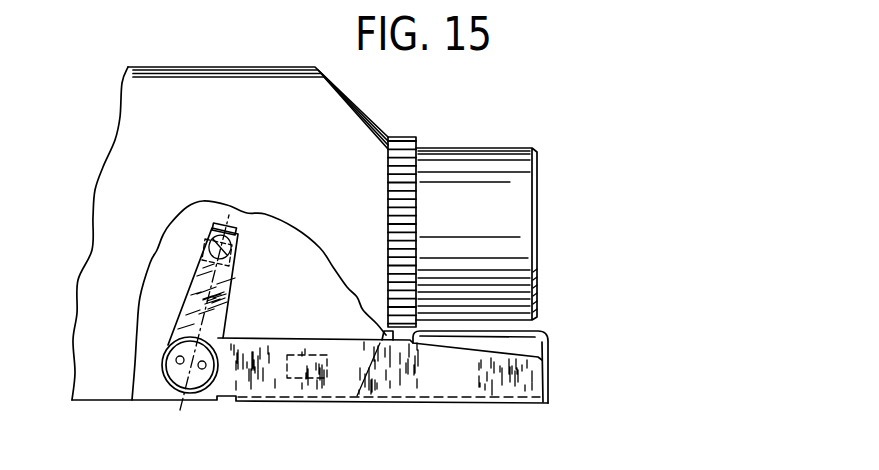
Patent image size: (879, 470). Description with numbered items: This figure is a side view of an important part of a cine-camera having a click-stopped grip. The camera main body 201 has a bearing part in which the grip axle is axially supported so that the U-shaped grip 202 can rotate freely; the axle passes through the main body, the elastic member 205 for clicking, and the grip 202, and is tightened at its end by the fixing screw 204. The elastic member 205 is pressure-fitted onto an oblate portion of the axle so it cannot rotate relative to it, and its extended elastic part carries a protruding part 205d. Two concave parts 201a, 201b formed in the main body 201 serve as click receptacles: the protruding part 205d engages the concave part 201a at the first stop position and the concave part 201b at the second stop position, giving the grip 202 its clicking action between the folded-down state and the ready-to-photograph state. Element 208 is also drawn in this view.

The main body 201 is at (365, 157).
The concave part 201a is at (224, 232).
The concave part 201b is at (287, 378).
The grip 202 is at (435, 385).
The fixing screw 204 is at (193, 382).
The elastic member 205 is at (183, 330).
The protruding part 205d is at (207, 240).
The spring wire 208 is at (357, 396).